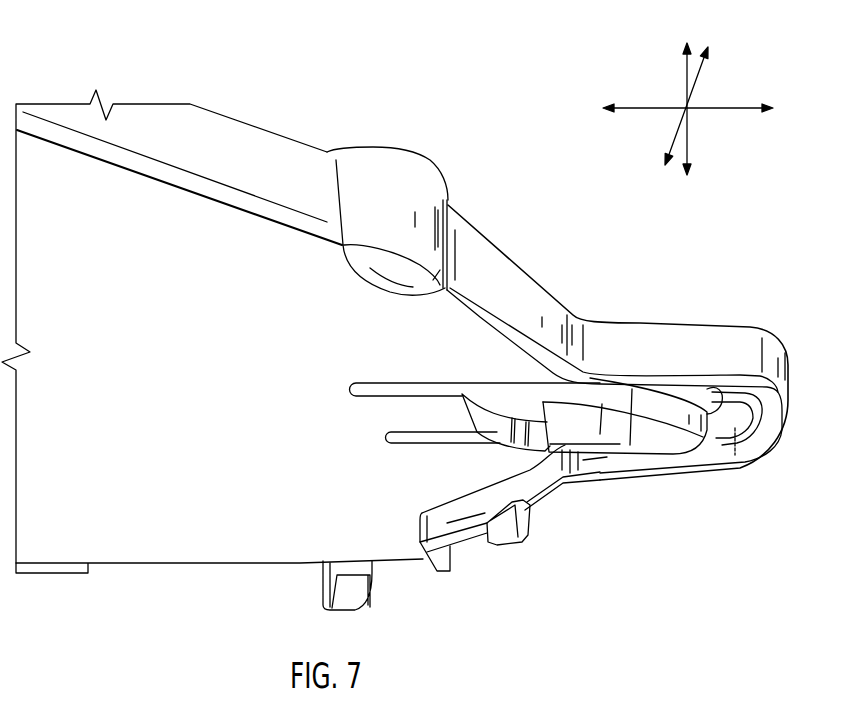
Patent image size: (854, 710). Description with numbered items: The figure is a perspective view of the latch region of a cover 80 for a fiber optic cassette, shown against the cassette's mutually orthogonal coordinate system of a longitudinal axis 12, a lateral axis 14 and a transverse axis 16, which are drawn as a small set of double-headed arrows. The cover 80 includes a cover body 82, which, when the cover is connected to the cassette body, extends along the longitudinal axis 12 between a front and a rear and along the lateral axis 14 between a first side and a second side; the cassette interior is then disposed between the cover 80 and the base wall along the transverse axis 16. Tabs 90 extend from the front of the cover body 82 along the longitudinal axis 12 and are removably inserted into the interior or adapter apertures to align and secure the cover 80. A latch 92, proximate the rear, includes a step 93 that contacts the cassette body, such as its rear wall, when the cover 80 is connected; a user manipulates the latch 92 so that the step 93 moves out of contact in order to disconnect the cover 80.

The longitudinal axis 12 is at (742, 107).
The lateral axis 14 is at (701, 68).
The transverse axis 16 is at (684, 72).
The cover 80 is at (541, 219).
The cover body 82 is at (267, 158).
The tab 90 is at (750, 316).
The latch 92 is at (665, 450).
The step 93 is at (560, 431).